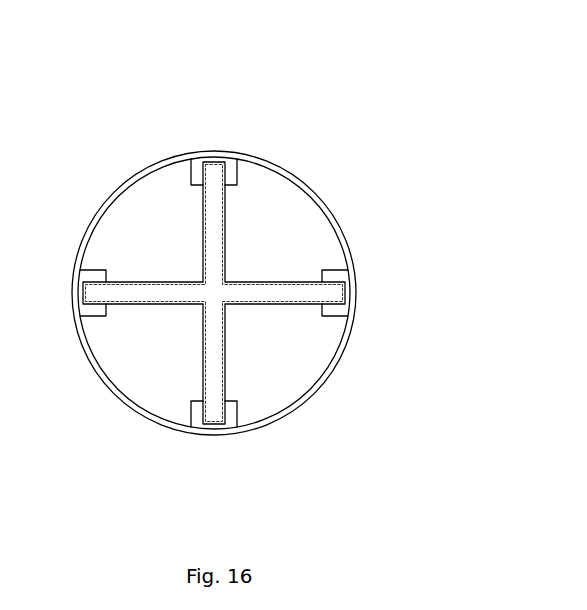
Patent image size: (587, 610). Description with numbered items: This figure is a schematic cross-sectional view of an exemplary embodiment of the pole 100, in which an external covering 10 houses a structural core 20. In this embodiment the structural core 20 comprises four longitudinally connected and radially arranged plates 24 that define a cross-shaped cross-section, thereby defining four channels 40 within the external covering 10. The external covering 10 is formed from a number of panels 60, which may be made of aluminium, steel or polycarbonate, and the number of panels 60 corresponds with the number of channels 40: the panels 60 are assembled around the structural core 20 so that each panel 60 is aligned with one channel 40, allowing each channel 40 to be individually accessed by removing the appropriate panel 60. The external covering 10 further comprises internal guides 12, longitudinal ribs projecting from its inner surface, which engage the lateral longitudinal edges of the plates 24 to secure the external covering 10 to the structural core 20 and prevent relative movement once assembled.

The pole 100 is at (290, 107).
The external covering 10 is at (90, 220).
The panels 60 is at (83, 248).
The internal guides 12 is at (233, 168).
The structural core 20 is at (213, 291).
The plates 24 is at (260, 290).
The channels 40 is at (158, 200).